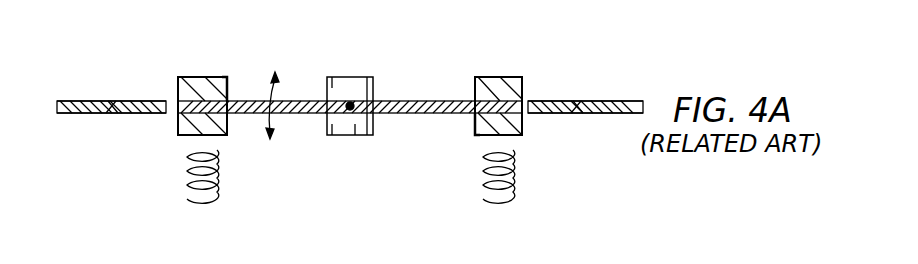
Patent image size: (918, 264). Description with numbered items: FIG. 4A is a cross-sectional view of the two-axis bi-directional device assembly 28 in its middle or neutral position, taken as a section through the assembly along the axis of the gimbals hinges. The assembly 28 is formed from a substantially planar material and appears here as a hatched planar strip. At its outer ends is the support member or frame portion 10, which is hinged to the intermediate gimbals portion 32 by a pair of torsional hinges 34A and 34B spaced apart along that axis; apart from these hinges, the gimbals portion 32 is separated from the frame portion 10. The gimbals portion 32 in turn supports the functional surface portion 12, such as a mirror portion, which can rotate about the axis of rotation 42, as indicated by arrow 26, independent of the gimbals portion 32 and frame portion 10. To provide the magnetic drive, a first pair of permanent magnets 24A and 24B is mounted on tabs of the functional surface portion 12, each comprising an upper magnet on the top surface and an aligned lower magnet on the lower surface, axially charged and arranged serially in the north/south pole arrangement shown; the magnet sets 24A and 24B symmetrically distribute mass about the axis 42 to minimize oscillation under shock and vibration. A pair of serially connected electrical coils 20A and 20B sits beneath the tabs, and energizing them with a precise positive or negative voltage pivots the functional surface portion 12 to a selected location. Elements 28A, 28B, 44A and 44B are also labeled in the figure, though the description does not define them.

The support member or frame portion 10 is at (85, 115).
The functional surface portion 12 is at (422, 100).
The electrical coil 20A is at (187, 178).
The electrical coil 20B is at (513, 178).
The permanent magnet 24A is at (196, 78).
The permanent magnet 24B is at (507, 78).
The arrow 26 is at (273, 122).
The two-axis bi-directional device assembly 28 is at (615, 99).
The magnet pole piece 28A is at (225, 92).
The magnet pole piece 28B is at (476, 124).
The intermediate gimbals portion 32 is at (142, 115).
The torsional hinge 34A is at (122, 102).
The torsional hinge 34B is at (578, 108).
The axis of rotation 42 is at (352, 105).
The mass block 44A is at (333, 80).
The mass block 44B is at (347, 77).